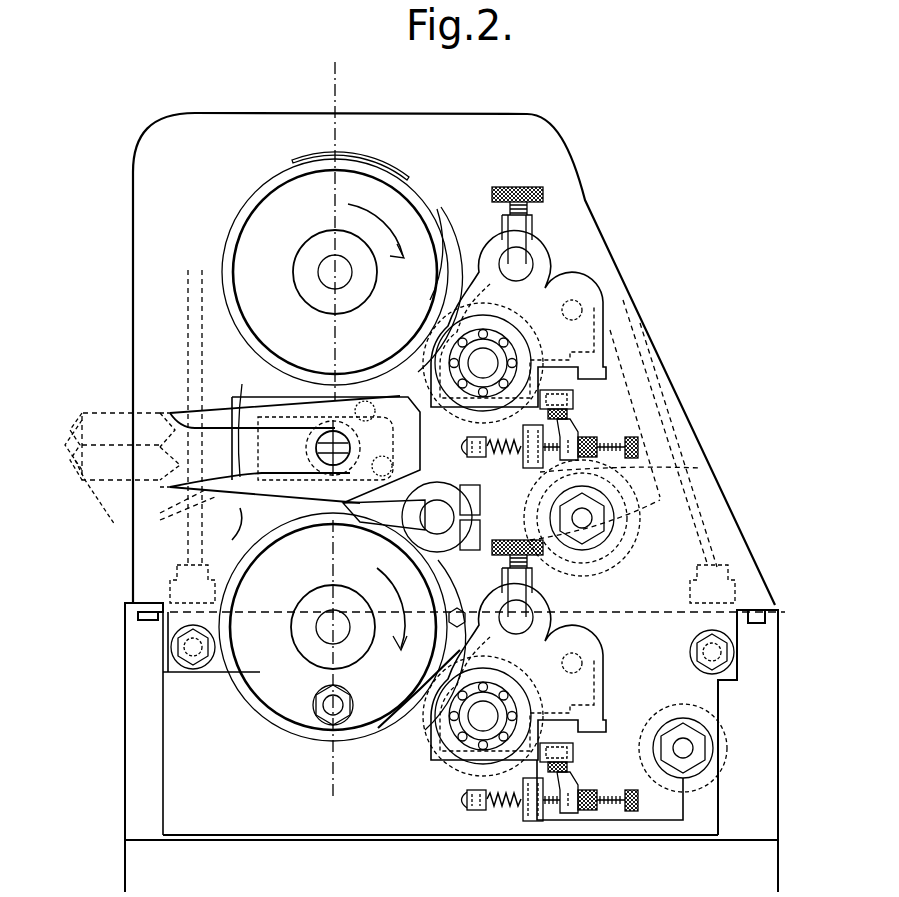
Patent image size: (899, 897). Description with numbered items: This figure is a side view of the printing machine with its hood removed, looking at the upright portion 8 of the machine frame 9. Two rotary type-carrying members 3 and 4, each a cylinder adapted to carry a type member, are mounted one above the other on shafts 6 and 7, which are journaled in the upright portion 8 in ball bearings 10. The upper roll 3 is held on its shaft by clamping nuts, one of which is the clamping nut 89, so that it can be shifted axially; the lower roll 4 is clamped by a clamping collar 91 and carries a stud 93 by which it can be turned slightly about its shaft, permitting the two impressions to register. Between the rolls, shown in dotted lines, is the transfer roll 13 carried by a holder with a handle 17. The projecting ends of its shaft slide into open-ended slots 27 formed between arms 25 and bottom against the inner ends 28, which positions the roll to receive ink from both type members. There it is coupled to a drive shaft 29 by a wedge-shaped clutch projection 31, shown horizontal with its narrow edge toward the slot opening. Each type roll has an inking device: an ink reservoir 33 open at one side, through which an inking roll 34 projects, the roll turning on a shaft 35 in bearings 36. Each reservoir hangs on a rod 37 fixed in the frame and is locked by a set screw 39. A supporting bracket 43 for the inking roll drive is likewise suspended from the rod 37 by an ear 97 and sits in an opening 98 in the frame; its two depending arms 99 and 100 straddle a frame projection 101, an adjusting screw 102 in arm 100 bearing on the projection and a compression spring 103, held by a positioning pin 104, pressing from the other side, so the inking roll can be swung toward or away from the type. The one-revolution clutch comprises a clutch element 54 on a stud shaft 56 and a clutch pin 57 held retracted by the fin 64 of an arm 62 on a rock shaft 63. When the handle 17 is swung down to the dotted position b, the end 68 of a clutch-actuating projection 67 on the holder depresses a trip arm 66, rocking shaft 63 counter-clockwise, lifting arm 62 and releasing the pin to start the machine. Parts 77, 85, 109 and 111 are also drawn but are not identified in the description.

The type-carrying member 3 is at (268, 216).
The type-carrying member 4 is at (270, 686).
The shaft 6 is at (278, 265).
The shaft 7 is at (326, 615).
The upright portion 8 is at (618, 382).
The machine frame 9 is at (768, 648).
The ball bearings 10 is at (452, 824).
The transfer roll 13 is at (291, 397).
The handle 17 is at (100, 414).
The arms 25 is at (246, 437).
The open-ended slot 27 is at (246, 400).
The inner end of slot 28 is at (350, 455).
The shaft 29 is at (318, 450).
The wedge-shaped clutch projection 31 is at (330, 436).
The ink reservoir 33 is at (422, 398).
The inking roll 34 is at (456, 340).
The shaft 35 is at (468, 347).
The bearings 36 is at (480, 364).
The rod 37 is at (541, 258).
The set screw 39 is at (527, 207).
The supporting bracket 43 is at (428, 306).
The clutch element 54 is at (670, 514).
The stud shaft 56 is at (600, 520).
The clutch pin 57 is at (660, 463).
The arm 62 is at (621, 412).
The rock shaft 63 is at (441, 533).
The fin 64 is at (538, 470).
The trip arm 66 is at (237, 540).
The clutch-actuating projection 67 is at (205, 505).
The end of clutch-actuating projection 68 is at (159, 550).
The fastening bolt 77 is at (390, 164).
The roller sleeve 85 is at (260, 188).
The clamping nut 89 is at (364, 292).
The clamping collar 91 is at (298, 646).
The stud 93 is at (330, 712).
The ear 97 is at (538, 233).
The opening 98 is at (441, 302).
The depending arm 99 is at (468, 458).
The depending arm 100 is at (577, 417).
The projection 101 is at (527, 470).
The adjusting screw 102 is at (640, 433).
The compression spring 103 is at (510, 461).
The positioning pin 104 is at (467, 447).
The bearing bore 109 is at (518, 254).
The threaded rod 111 is at (640, 462).
The dotted line position b is at (101, 530).